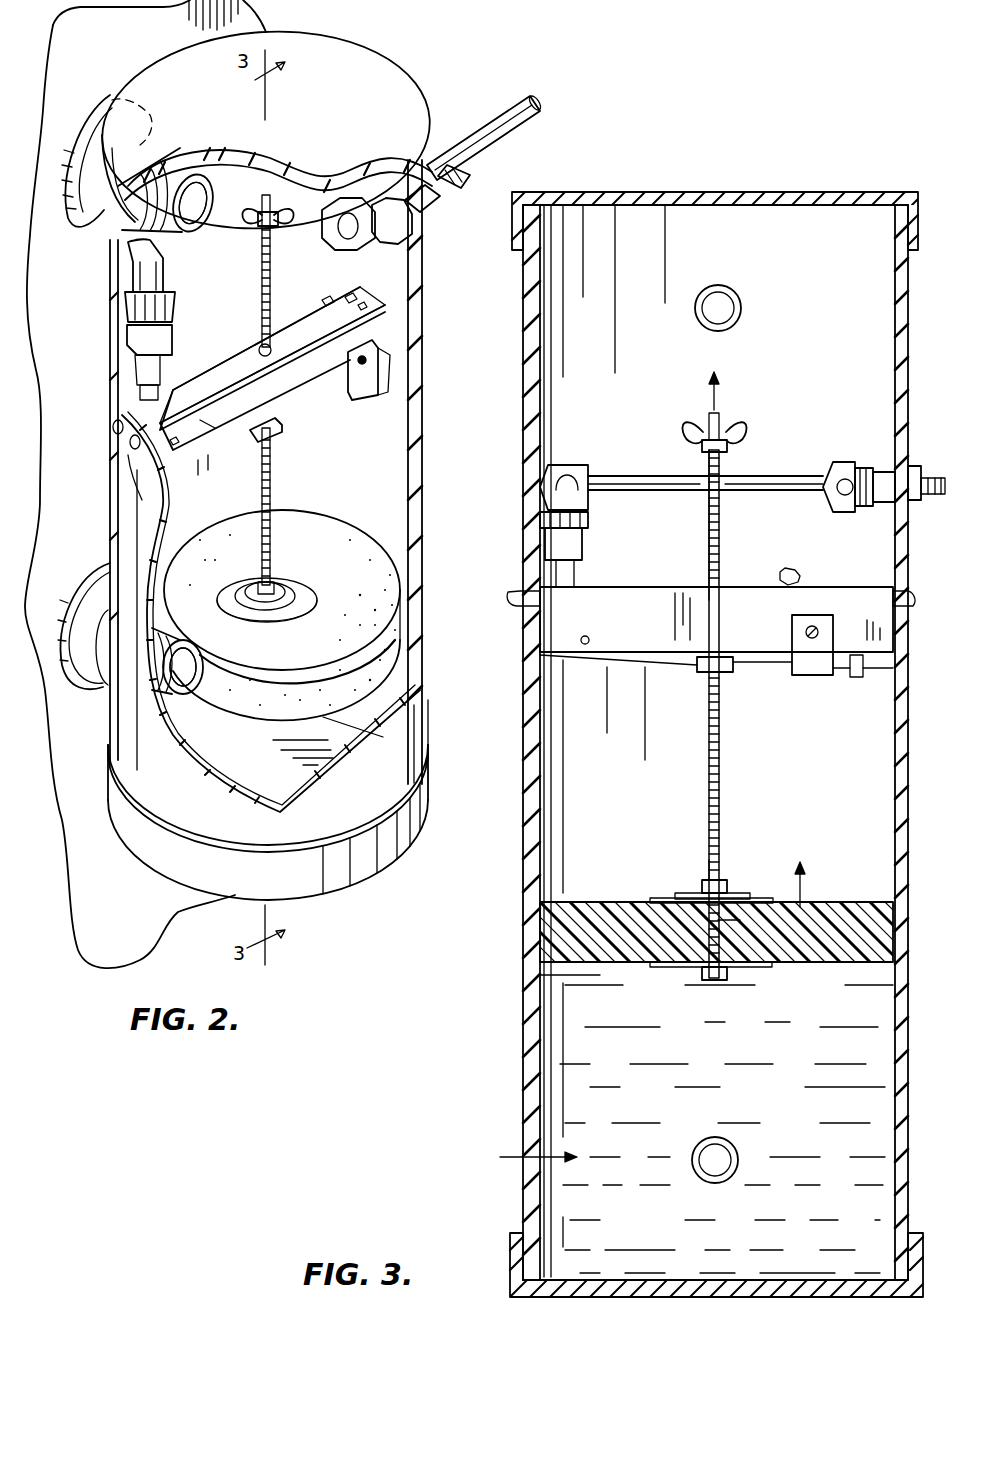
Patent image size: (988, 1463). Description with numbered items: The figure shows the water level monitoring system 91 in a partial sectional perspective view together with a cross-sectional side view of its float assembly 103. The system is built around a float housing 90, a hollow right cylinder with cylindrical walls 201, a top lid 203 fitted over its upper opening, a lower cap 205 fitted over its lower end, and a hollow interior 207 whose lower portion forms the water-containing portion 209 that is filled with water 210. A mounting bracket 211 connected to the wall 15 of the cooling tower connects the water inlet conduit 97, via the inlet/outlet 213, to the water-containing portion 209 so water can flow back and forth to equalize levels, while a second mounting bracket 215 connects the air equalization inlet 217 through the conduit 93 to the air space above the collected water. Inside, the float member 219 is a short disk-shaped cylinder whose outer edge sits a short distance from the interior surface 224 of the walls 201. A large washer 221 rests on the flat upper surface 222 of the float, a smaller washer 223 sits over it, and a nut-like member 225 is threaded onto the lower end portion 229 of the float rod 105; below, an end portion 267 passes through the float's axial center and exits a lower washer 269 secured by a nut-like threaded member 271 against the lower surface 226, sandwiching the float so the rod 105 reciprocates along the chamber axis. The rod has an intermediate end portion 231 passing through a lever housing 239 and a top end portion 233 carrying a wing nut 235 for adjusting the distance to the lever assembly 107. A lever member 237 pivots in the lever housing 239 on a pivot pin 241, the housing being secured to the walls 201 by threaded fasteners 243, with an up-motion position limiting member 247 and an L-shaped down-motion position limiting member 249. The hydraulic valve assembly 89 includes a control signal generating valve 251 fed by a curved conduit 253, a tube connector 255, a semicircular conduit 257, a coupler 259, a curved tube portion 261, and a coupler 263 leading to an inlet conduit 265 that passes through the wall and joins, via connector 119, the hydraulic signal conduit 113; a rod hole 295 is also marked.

In FIG. 2, the wall 15 is at (133, 47).
In FIG. 2, the hydraulic valve assembly 89 is at (185, 322).
In FIG. 2, the float housing 90 is at (420, 398).
In FIG. 3, the float housing 90 is at (905, 348).
In FIG. 2, the water level monitoring system 91 is at (395, 50).
In FIG. 3, the water level monitoring system 91 is at (850, 170).
In FIG. 2, the conduit 93 is at (100, 190).
In FIG. 3, the conduit 93 is at (735, 293).
In FIG. 2, the water inlet conduit 97 is at (105, 652).
In FIG. 3, the water inlet conduit 97 is at (712, 1140).
In FIG. 2, the float assembly 103 is at (372, 582).
In FIG. 3, the float assembly 103 is at (773, 882).
In FIG. 2, the float rod 105 is at (282, 482).
In FIG. 3, the float rod 105 is at (722, 760).
In FIG. 2, the lever assembly 107 is at (320, 412).
In FIG. 3, the lever assembly 107 is at (642, 672).
In FIG. 2, the hydraulic signal conduit 113 is at (522, 103).
In FIG. 2, the connector 119 is at (468, 182).
In FIG. 3, the connector 119 is at (920, 467).
In FIG. 2, the cylindrical walls 201 is at (112, 330).
In FIG. 3, the cylindrical walls 201 is at (900, 398).
In FIG. 2, the top lid 203 is at (357, 99).
In FIG. 3, the top lid 203 is at (698, 190).
In FIG. 2, the lower cap 205 is at (348, 888).
In FIG. 3, the lower cap 205 is at (797, 1297).
In FIG. 2, the hollow interior 207 is at (335, 270).
In FIG. 3, the hollow interior 207 is at (853, 763).
In FIG. 2, the water-containing portion 209 is at (252, 774).
In FIG. 3, the water-containing portion 209 is at (507, 1160).
In FIG. 3, the water 210 is at (672, 1232).
In FIG. 2, the mounting bracket 211 is at (68, 628).
In FIG. 2, the inlet/outlet 213 is at (193, 700).
In FIG. 3, the inlet/outlet 213 is at (715, 1160).
In FIG. 2, the second mounting bracket 215 is at (78, 175).
In FIG. 2, the air equalization inlet 217 is at (192, 175).
In FIG. 3, the air equalization inlet 217 is at (718, 308).
In FIG. 2, the float member 219 is at (385, 658).
In FIG. 3, the float member 219 is at (880, 910).
In FIG. 2, the large washer 221 is at (282, 608).
In FIG. 3, the large washer 221 is at (660, 895).
In FIG. 2, the upper surface 222 is at (372, 612).
In FIG. 2, the smaller washer 223 is at (258, 608).
In FIG. 3, the smaller washer 223 is at (692, 895).
In FIG. 3, the interior surface 224 is at (837, 900).
In FIG. 2, the nut-like member 225 is at (243, 584).
In FIG. 3, the nut-like member 225 is at (733, 880).
In FIG. 3, the lower surface 226 is at (600, 962).
In FIG. 2, the lower end portion 229 is at (270, 580).
In FIG. 3, the lower end portion 229 is at (708, 860).
In FIG. 2, the intermediate end portion 231 is at (290, 445).
In FIG. 3, the intermediate end portion 231 is at (720, 665).
In FIG. 2, the top end portion 233 is at (262, 260).
In FIG. 3, the top end portion 233 is at (720, 465).
In FIG. 2, the wing nut 235 is at (276, 222).
In FIG. 3, the wing nut 235 is at (735, 418).
In FIG. 2, the lever member 237 is at (350, 385).
In FIG. 3, the lever member 237 is at (806, 675).
In FIG. 2, the lever housing 239 is at (218, 428).
In FIG. 3, the lever housing 239 is at (668, 588).
In FIG. 2, the pivot pin 241 is at (135, 489).
In FIG. 3, the pivot pin 241 is at (590, 640).
In FIG. 2, the threaded fasteners 243 is at (128, 448).
In FIG. 3, the threaded fasteners 243 is at (518, 596).
In FIG. 2, the up-motion position limiting member 247 is at (322, 306).
In FIG. 3, the up-motion position limiting member 247 is at (802, 573).
In FIG. 2, the down-motion position limiting member 249 is at (390, 380).
In FIG. 3, the down-motion position limiting member 249 is at (828, 648).
In FIG. 2, the control signal generating valve 251 is at (130, 382).
In FIG. 3, the control signal generating valve 251 is at (550, 535).
In FIG. 2, the curved conduit 253 is at (172, 330).
In FIG. 3, the curved conduit 253 is at (555, 487).
In FIG. 2, the tube connector 255 is at (118, 300).
In FIG. 3, the tube connector 255 is at (560, 470).
In FIG. 2, the semicircular conduit 257 is at (233, 175).
In FIG. 3, the semicircular conduit 257 is at (643, 478).
In FIG. 2, the coupler 259 is at (330, 202).
In FIG. 3, the coupler 259 is at (835, 462).
In FIG. 2, the curved tube portion 261 is at (402, 180).
In FIG. 3, the curved tube portion 261 is at (845, 475).
In FIG. 2, the coupler 263 is at (442, 170).
In FIG. 3, the coupler 263 is at (880, 483).
In FIG. 3, the inlet conduit 265 is at (912, 500).
In FIG. 3, the end portion 267 is at (753, 921).
In FIG. 3, the lower washer 269 is at (725, 975).
In FIG. 3, the nut-like threaded member 271 is at (747, 1023).
In FIG. 2, the rod hole 295 is at (258, 345).